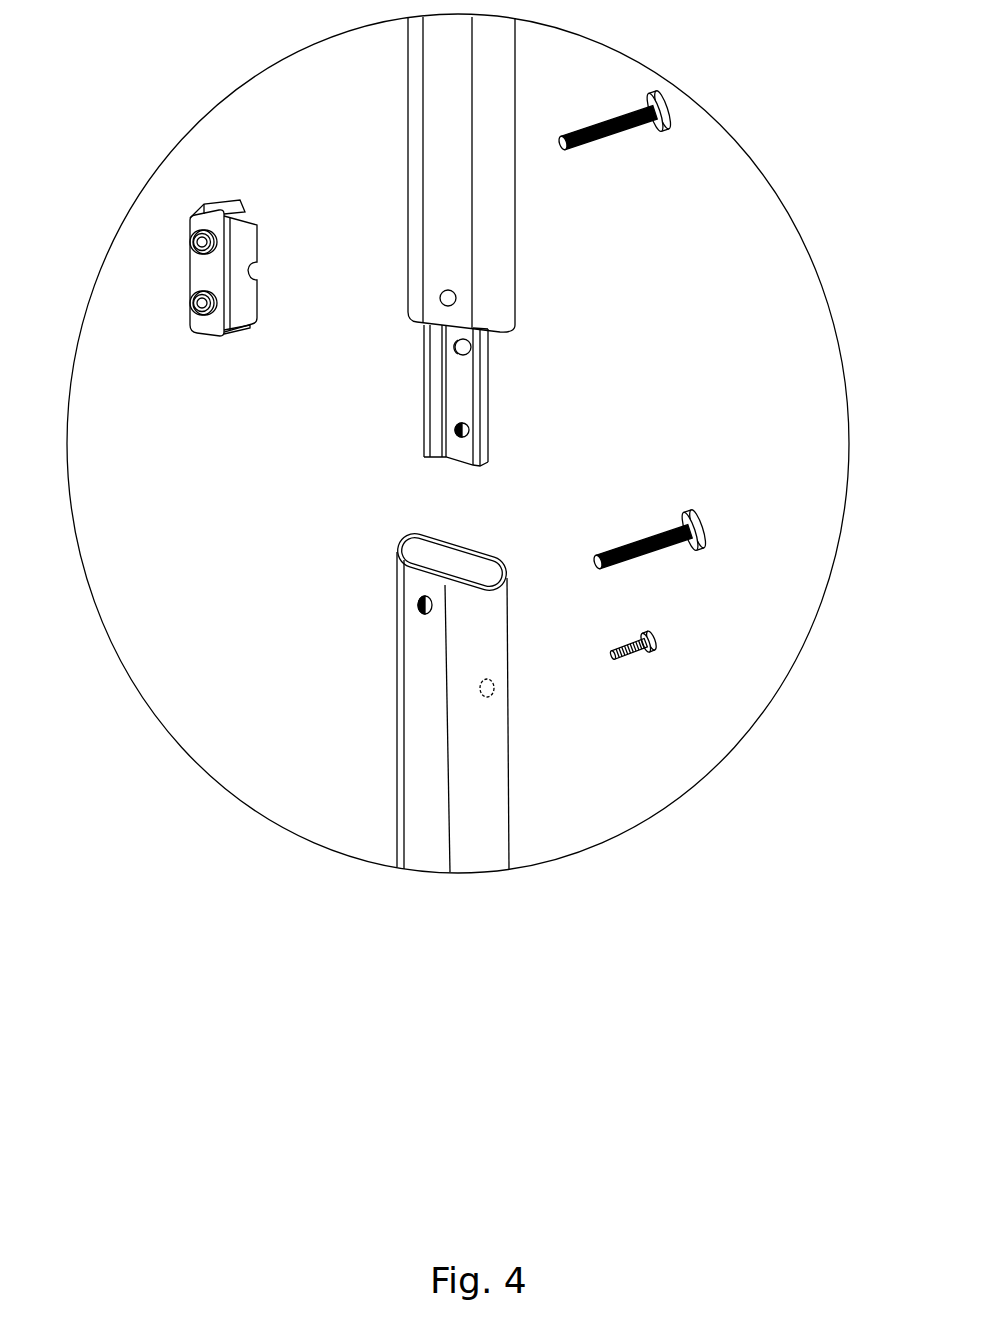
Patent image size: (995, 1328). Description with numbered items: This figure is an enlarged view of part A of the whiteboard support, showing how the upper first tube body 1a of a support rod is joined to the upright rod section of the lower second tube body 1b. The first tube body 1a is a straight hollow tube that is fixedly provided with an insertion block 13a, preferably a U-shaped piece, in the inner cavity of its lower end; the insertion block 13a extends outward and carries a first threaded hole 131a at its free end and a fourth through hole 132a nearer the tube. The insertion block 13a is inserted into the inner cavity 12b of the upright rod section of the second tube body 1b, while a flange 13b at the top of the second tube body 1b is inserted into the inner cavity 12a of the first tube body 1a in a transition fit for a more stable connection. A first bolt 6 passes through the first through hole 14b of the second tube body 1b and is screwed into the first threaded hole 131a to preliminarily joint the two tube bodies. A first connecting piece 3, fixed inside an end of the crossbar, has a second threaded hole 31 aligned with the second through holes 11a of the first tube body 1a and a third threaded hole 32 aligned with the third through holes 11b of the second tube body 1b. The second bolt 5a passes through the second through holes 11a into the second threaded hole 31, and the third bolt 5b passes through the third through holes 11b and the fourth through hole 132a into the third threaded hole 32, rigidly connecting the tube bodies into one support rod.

The part A is at (787, 211).
The first tube body 1a is at (446, 223).
The second through holes 11a is at (448, 298).
The insertion block 13a is at (448, 395).
The inner cavity of the first tube body 12a is at (485, 332).
The fourth through hole 132a is at (465, 348).
The first threaded hole 131a is at (462, 430).
The first connecting piece 3 is at (197, 275).
The second threaded hole 31 is at (197, 238).
The third threaded hole 32 is at (198, 304).
The second bolt 5a is at (620, 112).
The third bolt 5b is at (653, 557).
The first bolt 6 is at (642, 657).
The second tube body 1b is at (487, 785).
The inner cavity of the upright rod section of the second tube body 12b is at (428, 553).
The flange 13b is at (418, 565).
The third through holes 11b is at (421, 605).
The first through hole 14b is at (487, 688).